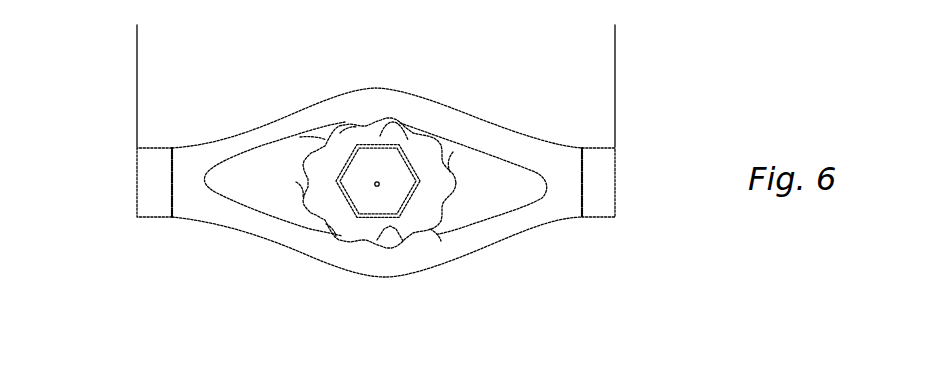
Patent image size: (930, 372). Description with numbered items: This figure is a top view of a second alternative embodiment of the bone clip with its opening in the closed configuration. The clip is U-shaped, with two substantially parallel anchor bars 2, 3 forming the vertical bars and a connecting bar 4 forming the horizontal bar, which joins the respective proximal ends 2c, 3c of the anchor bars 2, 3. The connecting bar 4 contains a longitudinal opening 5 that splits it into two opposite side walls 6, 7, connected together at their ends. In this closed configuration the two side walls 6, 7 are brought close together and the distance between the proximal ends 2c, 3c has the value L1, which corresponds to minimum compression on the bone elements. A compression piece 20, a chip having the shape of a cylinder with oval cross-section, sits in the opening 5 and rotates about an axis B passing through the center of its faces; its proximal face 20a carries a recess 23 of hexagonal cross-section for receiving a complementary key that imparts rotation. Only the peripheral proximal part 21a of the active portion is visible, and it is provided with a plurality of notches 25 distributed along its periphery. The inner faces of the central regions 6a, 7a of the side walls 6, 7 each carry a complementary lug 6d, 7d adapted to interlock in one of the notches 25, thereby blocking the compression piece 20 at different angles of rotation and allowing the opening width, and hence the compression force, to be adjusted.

The distance between proximal ends in closed configuration L1 is at (612, 33).
The anchor bar 2 is at (122, 149).
The proximal end 2c is at (157, 148).
The anchor bar 3 is at (632, 148).
The proximal end 3c is at (597, 148).
The connecting bar 4 is at (377, 192).
The longitudinal opening 5 is at (375, 179).
The side wall 6 is at (377, 95).
The central region 6a is at (374, 88).
The lug 6d is at (404, 125).
The side wall 7 is at (377, 281).
The central region 7a is at (384, 279).
The lug 7d is at (402, 242).
The compression piece 20 is at (432, 181).
The proximal face 20a is at (350, 136).
The proximal peripheral part 21a is at (460, 160).
The recess 23 is at (405, 181).
The notches 25 is at (326, 142).
The axis of rotation B is at (375, 188).